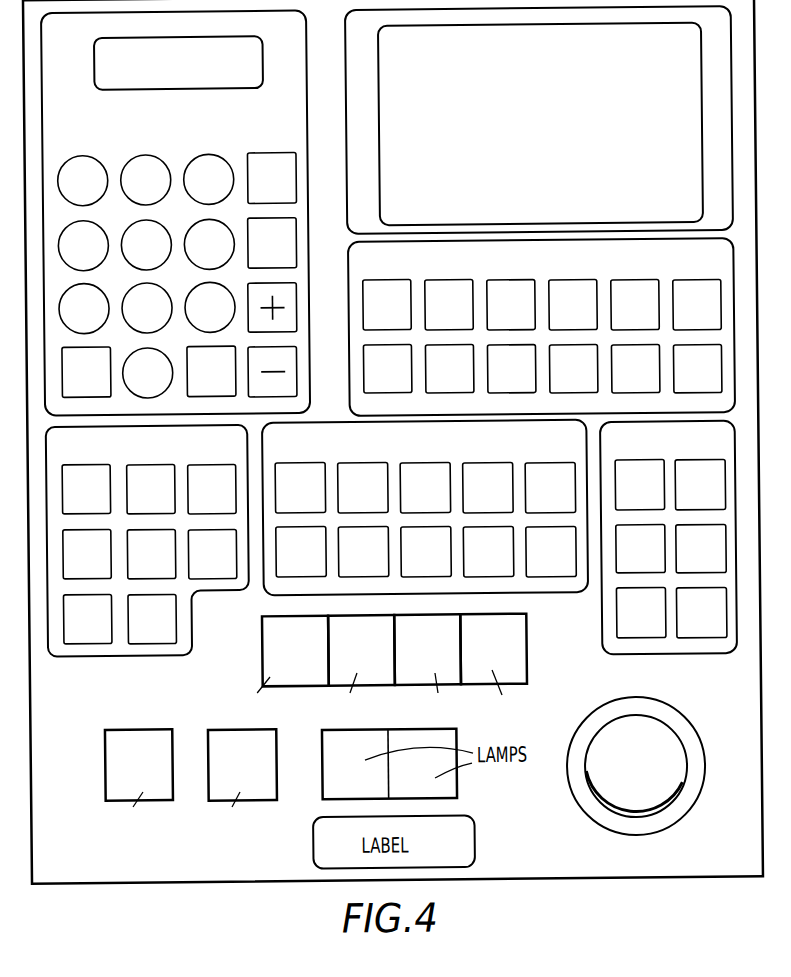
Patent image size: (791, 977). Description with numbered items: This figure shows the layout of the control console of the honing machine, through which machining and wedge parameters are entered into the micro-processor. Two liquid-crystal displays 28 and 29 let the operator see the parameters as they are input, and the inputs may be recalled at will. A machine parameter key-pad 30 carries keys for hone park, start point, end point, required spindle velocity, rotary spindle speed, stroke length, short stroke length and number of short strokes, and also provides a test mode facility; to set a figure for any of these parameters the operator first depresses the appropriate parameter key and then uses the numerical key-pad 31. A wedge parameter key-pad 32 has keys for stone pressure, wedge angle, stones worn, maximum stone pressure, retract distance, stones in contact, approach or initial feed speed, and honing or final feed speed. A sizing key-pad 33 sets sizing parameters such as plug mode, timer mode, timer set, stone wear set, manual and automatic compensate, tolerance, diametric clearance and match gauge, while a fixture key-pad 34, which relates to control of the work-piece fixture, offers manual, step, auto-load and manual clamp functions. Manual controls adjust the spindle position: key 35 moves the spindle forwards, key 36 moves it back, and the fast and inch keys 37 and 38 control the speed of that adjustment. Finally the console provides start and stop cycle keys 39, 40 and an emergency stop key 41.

The liquid-crystal display 28 is at (241, 80).
The liquid-crystal display 29 is at (565, 133).
The machine parameter key-pad 30 is at (651, 271).
The numerical key-pad 31 is at (169, 136).
The wedge parameter key-pad 32 is at (214, 453).
The sizing key-pad 33 is at (537, 451).
The fixture key-pad 34 is at (708, 452).
The forward key 35 is at (345, 659).
The back key 36 is at (478, 659).
The fast key 37 is at (413, 659).
The inch key 38 is at (280, 659).
The start cycle key 39 is at (150, 772).
The stop cycle key 40 is at (252, 773).
The emergency stop key 41 is at (621, 779).